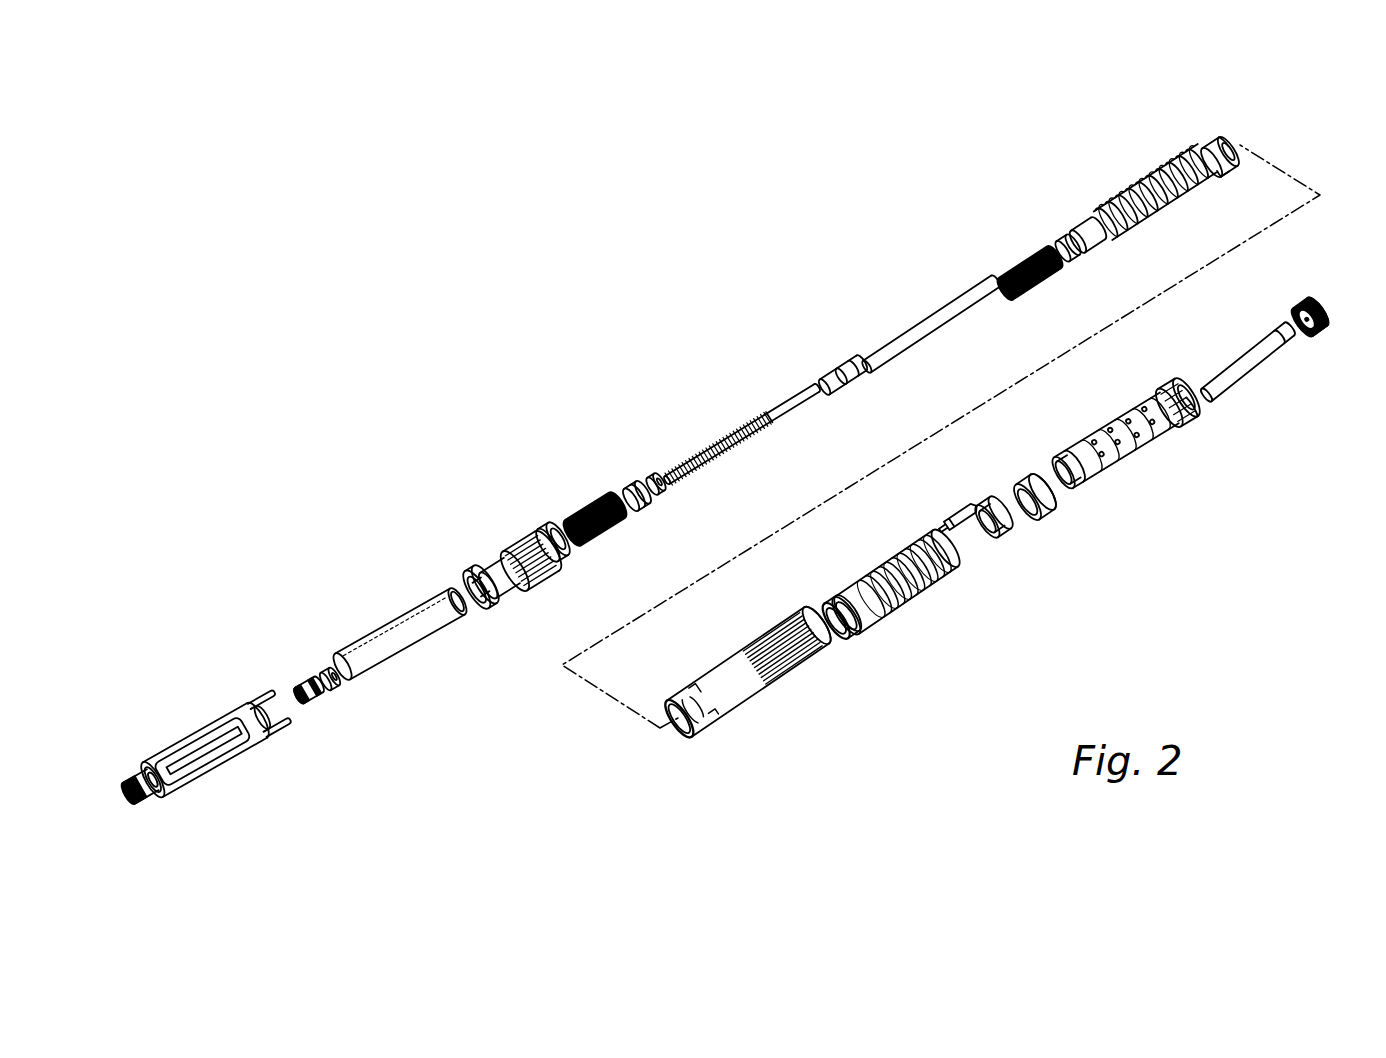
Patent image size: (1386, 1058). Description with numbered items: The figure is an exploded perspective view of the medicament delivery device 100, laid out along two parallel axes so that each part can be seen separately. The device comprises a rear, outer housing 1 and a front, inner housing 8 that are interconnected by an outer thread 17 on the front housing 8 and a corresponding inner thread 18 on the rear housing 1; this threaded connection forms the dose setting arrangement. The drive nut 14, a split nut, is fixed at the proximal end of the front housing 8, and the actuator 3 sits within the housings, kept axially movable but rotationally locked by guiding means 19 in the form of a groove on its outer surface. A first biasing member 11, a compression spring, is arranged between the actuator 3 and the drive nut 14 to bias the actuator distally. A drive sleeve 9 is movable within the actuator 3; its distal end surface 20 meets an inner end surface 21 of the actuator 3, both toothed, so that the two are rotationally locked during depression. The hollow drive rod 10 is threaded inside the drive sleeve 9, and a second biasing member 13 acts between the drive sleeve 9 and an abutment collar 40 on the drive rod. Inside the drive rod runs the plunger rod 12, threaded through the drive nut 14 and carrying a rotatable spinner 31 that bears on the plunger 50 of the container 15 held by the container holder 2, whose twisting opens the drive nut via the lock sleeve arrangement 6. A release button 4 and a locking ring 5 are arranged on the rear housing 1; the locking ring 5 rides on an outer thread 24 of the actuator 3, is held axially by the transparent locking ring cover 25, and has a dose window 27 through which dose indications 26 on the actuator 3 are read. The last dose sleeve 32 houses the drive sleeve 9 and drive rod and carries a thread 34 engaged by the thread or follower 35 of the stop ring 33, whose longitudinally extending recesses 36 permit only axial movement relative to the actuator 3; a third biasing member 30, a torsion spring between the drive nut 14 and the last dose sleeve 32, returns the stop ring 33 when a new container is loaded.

The medicament delivery device 100 is at (652, 278).
The rear, outer housing 1 is at (865, 578).
The container holder 2 is at (263, 727).
The actuator 3 is at (1327, 328).
The release button 4 is at (960, 512).
The locking ring 5 is at (1018, 528).
The lock sleeve arrangement 6 is at (507, 540).
The front, inner housing 8 is at (730, 672).
The drive sleeve 9 is at (1246, 365).
The hollow drive rod 10 is at (930, 320).
The first biasing member 11 is at (597, 497).
The plunger rod 12 is at (792, 400).
The second biasing member 13 is at (1045, 245).
The drive nut 14 is at (543, 533).
The container 15 is at (393, 647).
The outer thread 17 is at (828, 645).
The inner thread 18 is at (845, 640).
The guiding means 19 is at (1097, 475).
The distal end surface 20 is at (1290, 318).
The inner end surface 21 is at (1310, 340).
The outer thread 24 is at (1172, 378).
The locking ring cover 25 is at (1050, 512).
The dose indications 26 is at (1140, 450).
The dose window 27 is at (995, 495).
The third biasing member 30 is at (1003, 268).
The rotatable spinner 31 is at (655, 480).
The last dose sleeve 32 is at (1085, 225).
The stop ring 33 is at (1236, 148).
The thread 34 is at (1150, 185).
The thread or follower 35 is at (1215, 180).
The longitudinally extending recesses 36 is at (1222, 143).
The abutment collar 40 is at (855, 360).
The plunger 50 is at (643, 507).